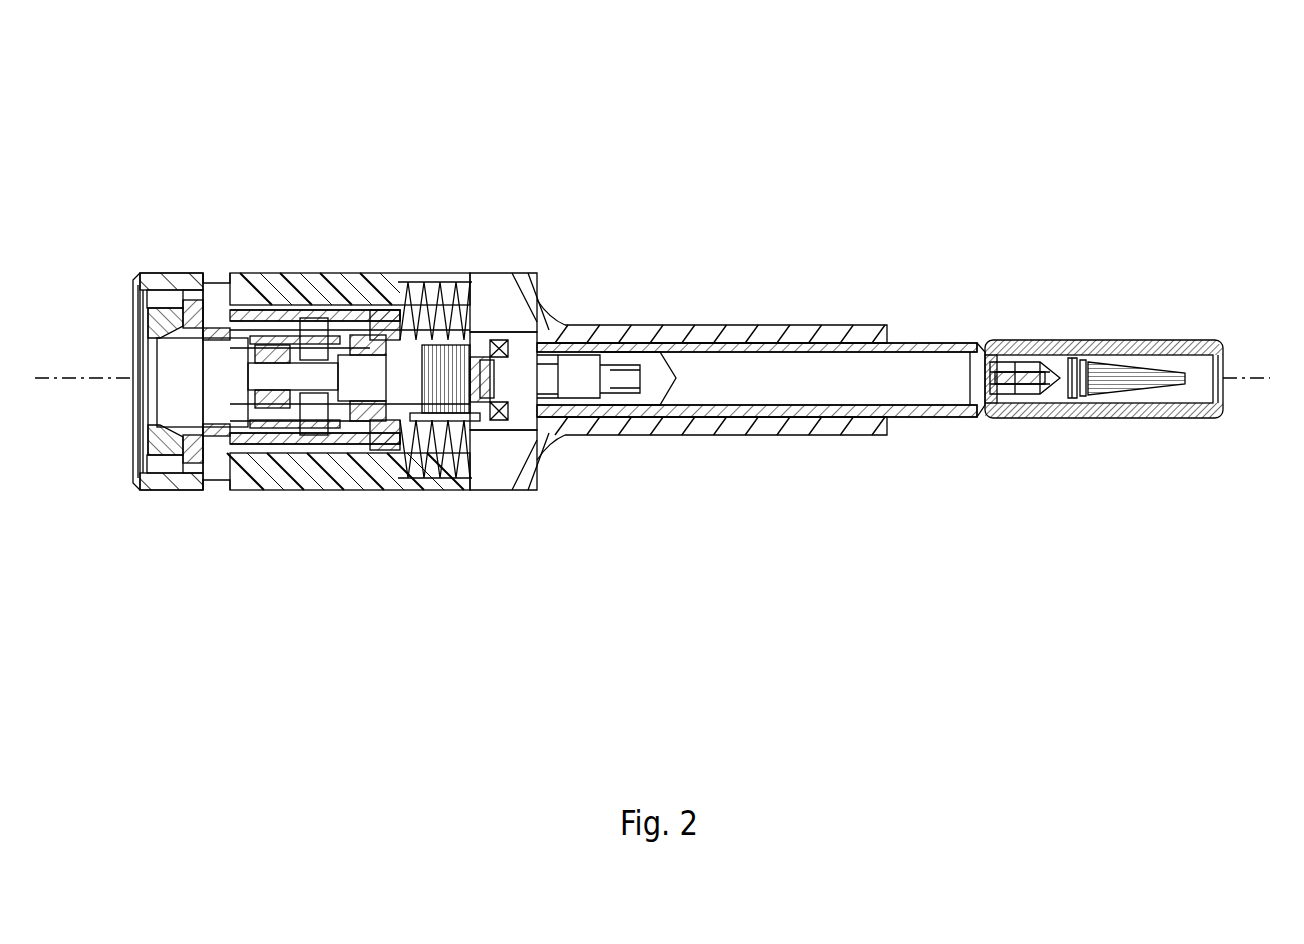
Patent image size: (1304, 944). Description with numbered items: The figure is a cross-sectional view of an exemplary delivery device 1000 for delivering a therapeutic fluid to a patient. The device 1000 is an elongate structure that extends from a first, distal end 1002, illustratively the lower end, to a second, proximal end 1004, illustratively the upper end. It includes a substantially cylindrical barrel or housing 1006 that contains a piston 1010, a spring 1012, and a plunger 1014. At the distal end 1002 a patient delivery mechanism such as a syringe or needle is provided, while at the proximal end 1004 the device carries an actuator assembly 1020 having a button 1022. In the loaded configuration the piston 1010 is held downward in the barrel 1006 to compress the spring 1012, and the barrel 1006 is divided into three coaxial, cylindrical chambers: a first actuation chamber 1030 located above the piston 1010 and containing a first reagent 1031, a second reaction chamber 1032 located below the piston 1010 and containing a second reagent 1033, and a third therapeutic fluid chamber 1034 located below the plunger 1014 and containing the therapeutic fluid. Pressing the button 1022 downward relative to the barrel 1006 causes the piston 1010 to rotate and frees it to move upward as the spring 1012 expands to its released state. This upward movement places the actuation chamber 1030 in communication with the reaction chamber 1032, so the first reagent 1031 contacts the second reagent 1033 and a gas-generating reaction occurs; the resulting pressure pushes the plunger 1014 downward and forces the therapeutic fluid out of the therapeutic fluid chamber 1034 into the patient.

The delivery device 1000 is at (1135, 204).
The first, distal end 1002 is at (1218, 452).
The second, proximal end 1004 is at (116, 512).
The barrel 1006 is at (622, 325).
The piston 1010 is at (390, 426).
The spring 1012 is at (446, 350).
The plunger 1014 is at (700, 398).
The actuator assembly 1020 is at (116, 339).
The button 1022 is at (155, 272).
The first actuation chamber 1030 is at (299, 352).
The first reagent 1031 is at (300, 402).
The second reaction chamber 1032 is at (456, 416).
The second reagent 1033 is at (468, 415).
The third therapeutic fluid chamber 1034 is at (883, 376).